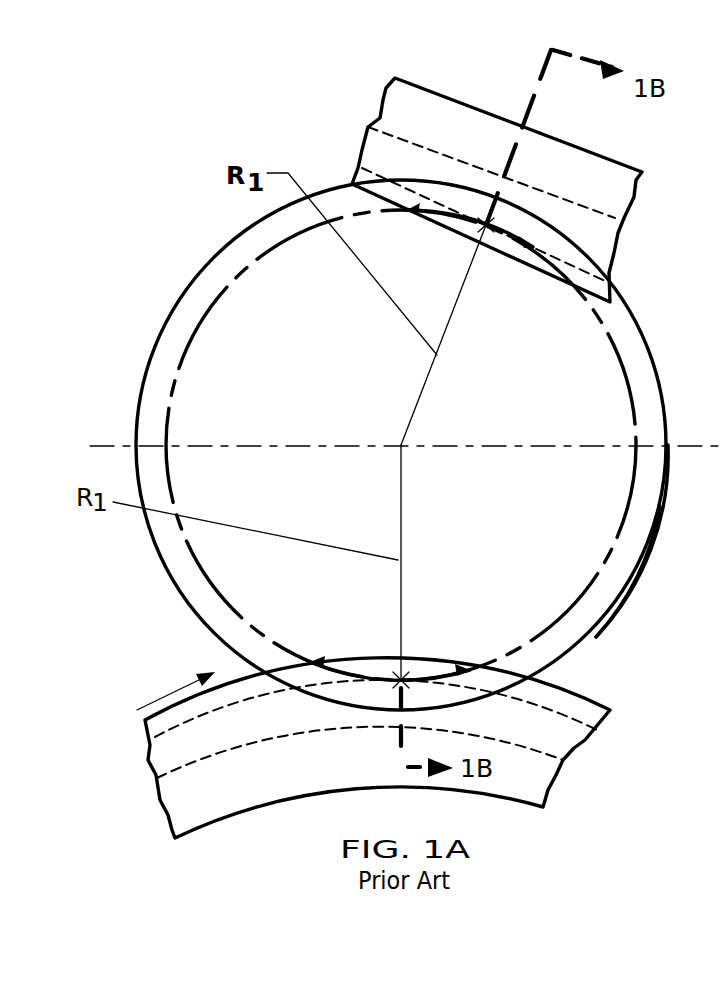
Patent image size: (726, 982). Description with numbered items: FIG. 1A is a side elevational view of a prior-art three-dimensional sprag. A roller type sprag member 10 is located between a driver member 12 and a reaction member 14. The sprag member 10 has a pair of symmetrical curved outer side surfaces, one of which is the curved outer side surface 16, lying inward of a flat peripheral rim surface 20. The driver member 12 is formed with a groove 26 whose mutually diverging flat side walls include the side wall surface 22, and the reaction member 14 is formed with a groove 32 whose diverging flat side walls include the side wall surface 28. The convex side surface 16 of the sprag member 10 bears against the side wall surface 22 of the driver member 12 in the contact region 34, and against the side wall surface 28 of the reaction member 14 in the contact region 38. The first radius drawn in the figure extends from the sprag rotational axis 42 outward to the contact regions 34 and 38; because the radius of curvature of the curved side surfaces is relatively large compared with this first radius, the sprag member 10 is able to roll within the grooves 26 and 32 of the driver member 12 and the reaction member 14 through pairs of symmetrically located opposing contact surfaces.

The sprag member 10 is at (373, 445).
The driver member 12 is at (373, 757).
The reaction member 14 is at (497, 166).
The curved outer side surface 16 is at (661, 572).
The flat peripheral rim surface 20 is at (655, 358).
The side wall surface 22 is at (560, 743).
The groove 26 is at (419, 753).
The side wall surface 28 is at (448, 151).
The groove 32 is at (534, 224).
The contact region 34 is at (401, 680).
The contact region 38 is at (486, 225).
The sprag rotational axis 42 is at (396, 443).